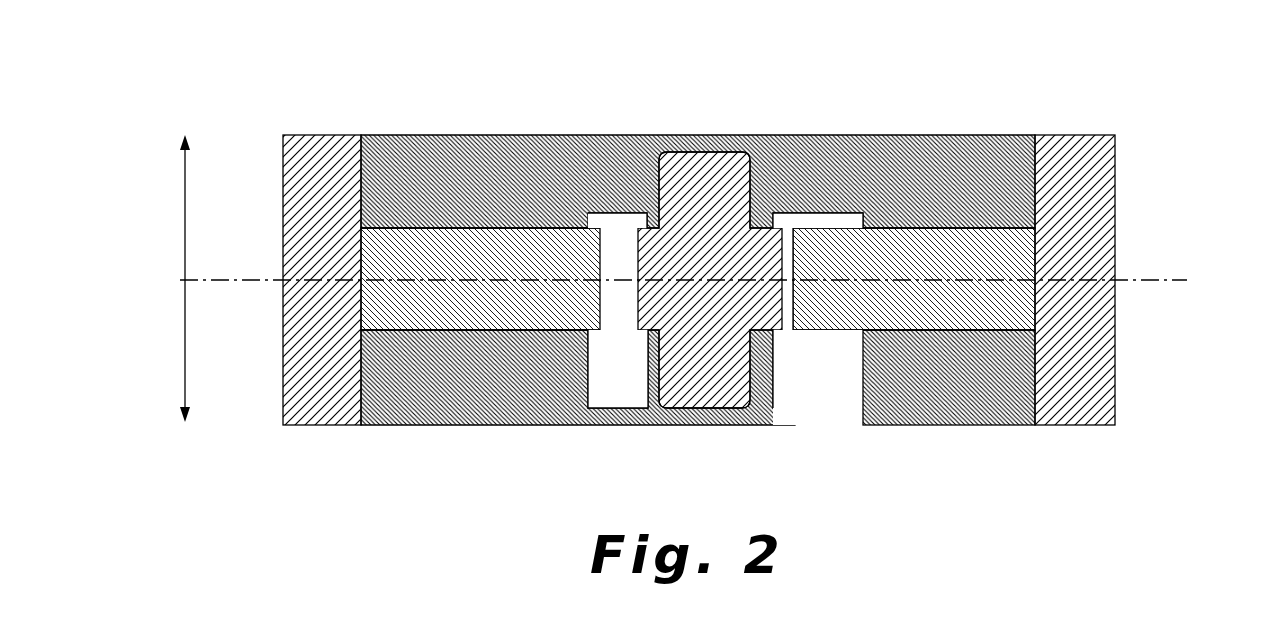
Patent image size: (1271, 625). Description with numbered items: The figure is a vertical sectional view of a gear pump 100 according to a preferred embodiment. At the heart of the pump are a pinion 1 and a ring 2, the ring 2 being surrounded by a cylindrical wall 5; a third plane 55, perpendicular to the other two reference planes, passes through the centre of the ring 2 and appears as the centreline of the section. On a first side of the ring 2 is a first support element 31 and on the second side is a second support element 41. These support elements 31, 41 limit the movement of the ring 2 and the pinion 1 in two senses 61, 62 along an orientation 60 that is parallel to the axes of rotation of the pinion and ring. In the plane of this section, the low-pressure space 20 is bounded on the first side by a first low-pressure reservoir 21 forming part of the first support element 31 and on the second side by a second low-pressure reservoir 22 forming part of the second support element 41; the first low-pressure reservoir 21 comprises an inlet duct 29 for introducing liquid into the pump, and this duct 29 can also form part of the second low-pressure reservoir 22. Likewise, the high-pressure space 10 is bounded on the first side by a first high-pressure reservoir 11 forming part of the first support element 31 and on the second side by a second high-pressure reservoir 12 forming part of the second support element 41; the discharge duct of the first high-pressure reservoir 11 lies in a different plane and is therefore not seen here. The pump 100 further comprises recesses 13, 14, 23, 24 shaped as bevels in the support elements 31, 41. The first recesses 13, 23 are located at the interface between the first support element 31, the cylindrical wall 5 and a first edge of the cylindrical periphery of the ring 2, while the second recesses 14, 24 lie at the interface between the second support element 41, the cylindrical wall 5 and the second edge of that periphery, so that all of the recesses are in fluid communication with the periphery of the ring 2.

The gear pump 100 is at (850, 95).
The pinion 1 is at (728, 192).
The ring 2 is at (895, 267).
The cylindrical wall 5 is at (320, 160).
The high-pressure space 10 is at (611, 283).
The first high-pressure reservoir 11 is at (622, 375).
The second high-pressure reservoir 12 is at (613, 218).
The first recess 13 is at (361, 330).
The second recess 14 is at (361, 228).
The low-pressure space 20 is at (790, 272).
The first low-pressure reservoir 21 is at (820, 377).
The second low-pressure reservoir 22 is at (827, 222).
The first recess 23 is at (1035, 333).
The second recess 24 is at (1035, 228).
The inlet duct 29 is at (810, 415).
The first support element 31 is at (967, 383).
The second support element 41 is at (990, 175).
The third plane 55 is at (1178, 280).
The orientation 60 is at (222, 128).
The first sense 61 is at (185, 343).
The second sense 62 is at (185, 213).